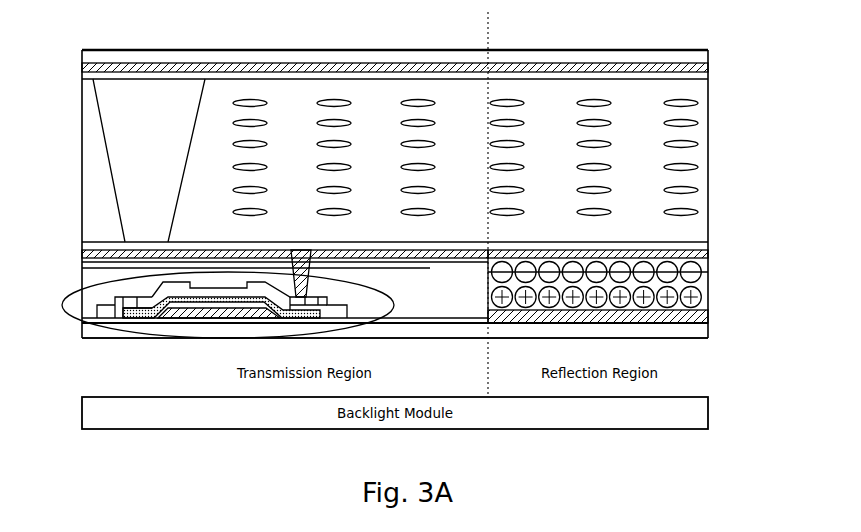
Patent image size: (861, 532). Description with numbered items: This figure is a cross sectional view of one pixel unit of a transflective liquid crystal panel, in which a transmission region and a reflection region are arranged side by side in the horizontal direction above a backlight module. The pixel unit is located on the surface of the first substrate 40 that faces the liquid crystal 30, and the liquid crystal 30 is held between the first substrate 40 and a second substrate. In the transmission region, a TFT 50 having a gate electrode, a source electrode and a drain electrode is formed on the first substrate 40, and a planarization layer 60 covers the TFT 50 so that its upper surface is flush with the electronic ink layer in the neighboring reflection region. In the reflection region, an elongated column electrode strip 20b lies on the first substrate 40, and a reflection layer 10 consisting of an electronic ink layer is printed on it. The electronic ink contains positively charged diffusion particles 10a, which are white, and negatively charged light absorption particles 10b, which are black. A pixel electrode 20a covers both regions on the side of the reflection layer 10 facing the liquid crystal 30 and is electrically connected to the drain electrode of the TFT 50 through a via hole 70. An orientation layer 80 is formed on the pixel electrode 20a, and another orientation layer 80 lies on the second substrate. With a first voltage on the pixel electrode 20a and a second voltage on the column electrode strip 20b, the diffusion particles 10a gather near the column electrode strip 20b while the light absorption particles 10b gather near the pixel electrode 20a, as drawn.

The reflection layer 10 is at (638, 290).
The positively charged diffusion particles 10a is at (702, 300).
The negatively charged light absorption particles 10b is at (702, 267).
The pixel electrode 20a is at (670, 255).
The column electrode strip 20b is at (683, 318).
The liquid crystal 30 is at (692, 123).
The first substrate 40 is at (100, 330).
The TFT 50 is at (62, 305).
The planarization layer 60 is at (110, 279).
The via hole 70 is at (180, 264).
The orientation layer 80 is at (117, 78).